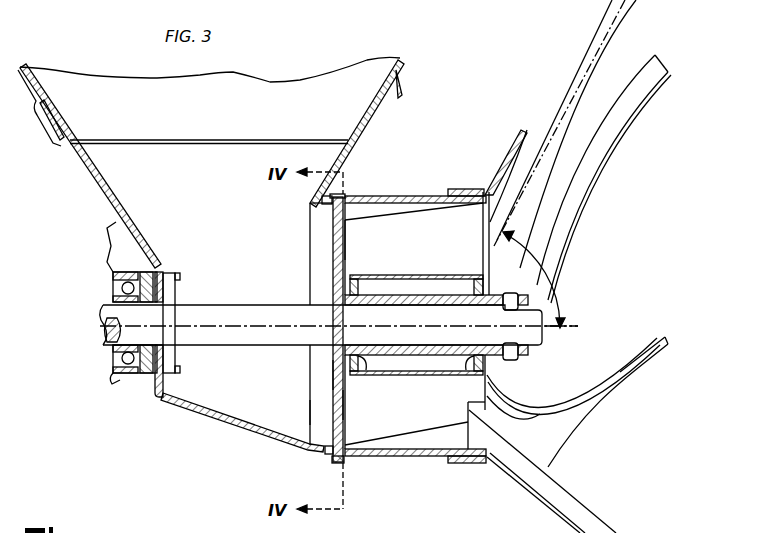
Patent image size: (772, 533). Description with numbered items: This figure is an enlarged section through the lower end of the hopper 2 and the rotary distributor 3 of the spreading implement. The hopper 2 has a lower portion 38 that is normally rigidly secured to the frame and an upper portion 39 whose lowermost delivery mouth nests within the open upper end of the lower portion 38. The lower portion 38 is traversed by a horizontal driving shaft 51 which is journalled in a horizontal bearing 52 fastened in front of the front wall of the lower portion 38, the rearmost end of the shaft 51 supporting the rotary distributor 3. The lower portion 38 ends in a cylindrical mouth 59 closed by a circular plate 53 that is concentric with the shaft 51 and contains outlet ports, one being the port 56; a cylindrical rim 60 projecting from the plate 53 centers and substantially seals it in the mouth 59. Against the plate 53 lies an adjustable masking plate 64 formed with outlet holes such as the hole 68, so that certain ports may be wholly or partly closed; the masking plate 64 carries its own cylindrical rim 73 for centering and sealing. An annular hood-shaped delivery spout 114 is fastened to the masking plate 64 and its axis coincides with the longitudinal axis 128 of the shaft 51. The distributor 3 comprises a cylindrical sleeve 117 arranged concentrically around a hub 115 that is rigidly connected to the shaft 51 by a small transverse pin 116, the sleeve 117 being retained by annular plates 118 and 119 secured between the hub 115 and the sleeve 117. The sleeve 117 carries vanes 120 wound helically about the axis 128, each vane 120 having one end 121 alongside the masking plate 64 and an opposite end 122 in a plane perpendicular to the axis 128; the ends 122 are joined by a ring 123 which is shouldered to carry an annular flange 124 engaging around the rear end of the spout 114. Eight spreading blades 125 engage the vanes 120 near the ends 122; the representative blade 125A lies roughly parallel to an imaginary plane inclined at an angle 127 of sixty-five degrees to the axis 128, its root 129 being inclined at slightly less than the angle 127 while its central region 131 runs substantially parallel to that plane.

The hopper 2 is at (312, 76).
The rotary distributor 3 is at (618, 155).
The lower portion of the hopper 38 is at (90, 172).
The upper portion of the hopper 39 is at (405, 66).
The driving shaft 51 is at (224, 304).
The bearing 52 is at (120, 378).
The circular plate 53 is at (332, 230).
The outlet port 56 is at (332, 376).
The cylindrical mouth 59 is at (310, 447).
The cylindrical rim 60 is at (327, 452).
The masking plate 64 is at (345, 400).
The outlet hole 68 is at (344, 250).
The cylindrical rim 73 is at (338, 463).
The delivery spout 114 is at (382, 200).
The hub 115 is at (520, 351).
The transverse pin 116 is at (515, 362).
The cylindrical sleeve 117 is at (416, 276).
The annular plate 118 is at (366, 368).
The annular plate 119 is at (476, 368).
The vane 120 is at (413, 431).
The end of vane 121 is at (330, 412).
The end of vane 122 is at (500, 405).
The ring 123 is at (492, 190).
The annular flange 124 is at (452, 190).
The spreading blade 125 is at (656, 501).
The spreading blade 125A is at (690, 20).
The angle 127 is at (560, 282).
The longitudinal axis 128 is at (618, 318).
The root of blade 129 is at (488, 268).
The central region of blade 131 is at (597, 28).